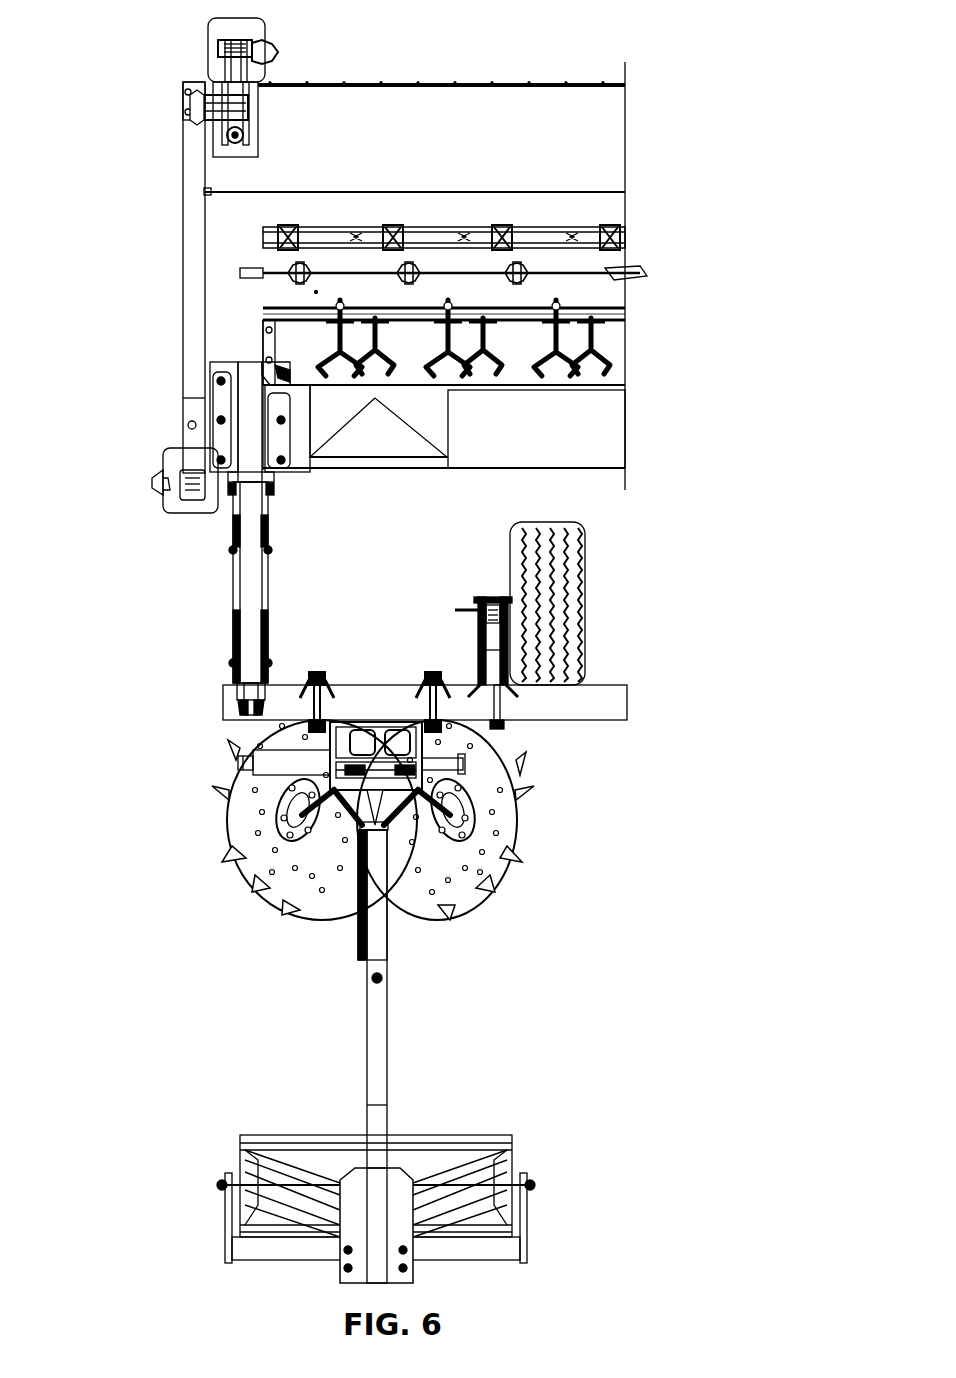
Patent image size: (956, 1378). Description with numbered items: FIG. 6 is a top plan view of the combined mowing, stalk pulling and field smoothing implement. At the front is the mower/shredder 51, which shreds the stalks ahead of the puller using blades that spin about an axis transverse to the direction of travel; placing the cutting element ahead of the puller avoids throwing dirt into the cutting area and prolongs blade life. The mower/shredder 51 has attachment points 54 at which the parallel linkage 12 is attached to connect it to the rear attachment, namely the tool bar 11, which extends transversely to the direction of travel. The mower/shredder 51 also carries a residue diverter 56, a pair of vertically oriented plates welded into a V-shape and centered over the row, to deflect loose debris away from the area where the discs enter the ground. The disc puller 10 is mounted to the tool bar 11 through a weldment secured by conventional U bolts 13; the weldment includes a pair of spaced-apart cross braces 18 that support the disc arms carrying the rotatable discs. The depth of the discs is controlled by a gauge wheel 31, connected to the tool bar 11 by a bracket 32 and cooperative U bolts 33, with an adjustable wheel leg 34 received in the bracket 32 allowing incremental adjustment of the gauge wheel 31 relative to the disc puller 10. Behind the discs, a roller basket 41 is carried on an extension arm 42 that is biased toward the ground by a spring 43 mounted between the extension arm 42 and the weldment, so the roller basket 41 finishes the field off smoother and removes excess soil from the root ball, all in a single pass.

The disc puller 10 is at (422, 769).
The tool bar 11 is at (603, 705).
The parallel linkage 12 is at (248, 575).
The U bolts 13 is at (322, 706).
The cross braces 18 is at (408, 735).
The gauge wheel 31 is at (575, 612).
The bracket 32 is at (478, 632).
The U bolts 33 is at (500, 710).
The wheel leg 34 is at (493, 602).
The roller basket 41 is at (483, 1145).
The extension arm 42 is at (375, 1025).
The spring 43 is at (360, 940).
The mower/shredder 51 is at (165, 230).
The attachment points 54 is at (276, 489).
The residue diverter 56 is at (392, 440).